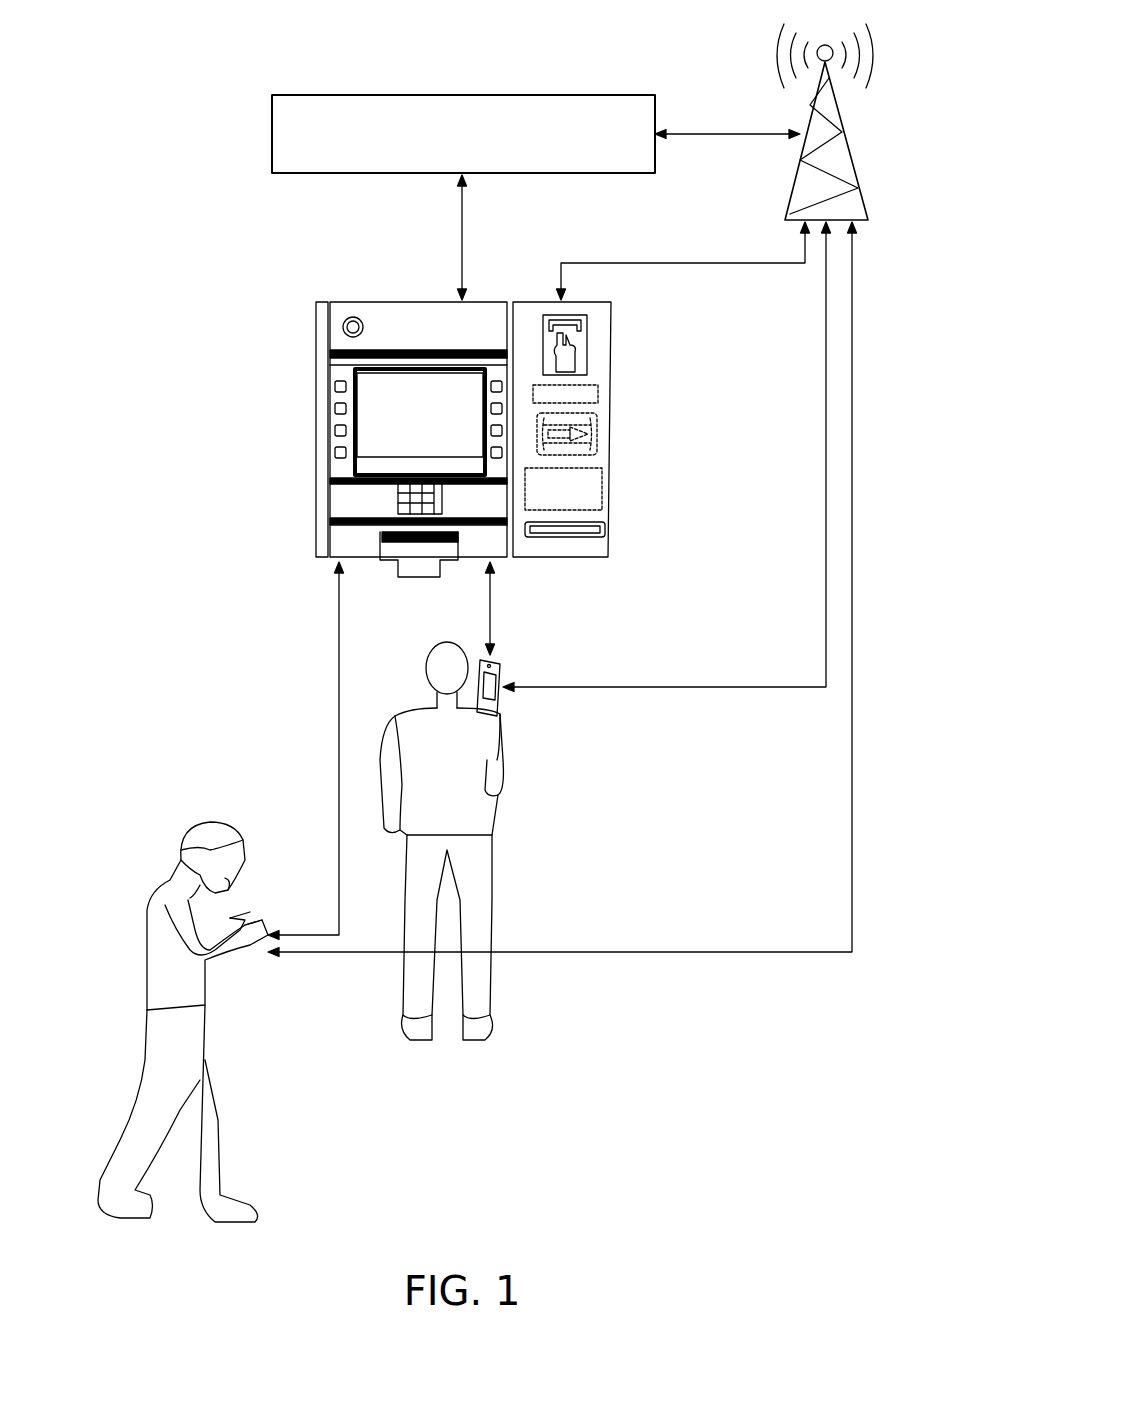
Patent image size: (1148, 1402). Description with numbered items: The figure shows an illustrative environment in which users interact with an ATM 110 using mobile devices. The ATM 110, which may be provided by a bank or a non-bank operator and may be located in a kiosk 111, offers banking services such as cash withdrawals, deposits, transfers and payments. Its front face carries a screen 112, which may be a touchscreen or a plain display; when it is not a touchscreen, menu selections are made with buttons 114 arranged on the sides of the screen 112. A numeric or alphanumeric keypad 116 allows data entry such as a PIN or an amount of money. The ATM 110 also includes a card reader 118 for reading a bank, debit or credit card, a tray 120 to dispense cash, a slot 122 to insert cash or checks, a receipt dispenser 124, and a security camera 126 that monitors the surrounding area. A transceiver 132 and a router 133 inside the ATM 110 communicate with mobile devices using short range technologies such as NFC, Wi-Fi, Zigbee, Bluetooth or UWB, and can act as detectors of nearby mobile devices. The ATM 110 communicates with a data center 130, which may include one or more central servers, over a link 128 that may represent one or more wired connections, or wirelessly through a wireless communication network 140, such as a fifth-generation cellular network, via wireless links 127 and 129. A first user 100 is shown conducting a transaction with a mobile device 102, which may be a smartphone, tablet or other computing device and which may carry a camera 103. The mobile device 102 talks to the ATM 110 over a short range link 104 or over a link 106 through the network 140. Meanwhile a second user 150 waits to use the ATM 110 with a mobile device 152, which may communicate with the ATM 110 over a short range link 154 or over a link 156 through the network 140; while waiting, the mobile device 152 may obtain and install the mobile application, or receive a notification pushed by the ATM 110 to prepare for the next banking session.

The user 100 is at (486, 850).
The mobile device 102 is at (503, 680).
The camera 103 is at (482, 662).
The link 104 is at (490, 608).
The link 106 is at (728, 687).
The ATM 110 is at (472, 413).
The kiosk 111 is at (628, 363).
The screen 112 is at (367, 420).
The buttons 114 is at (338, 386).
The keypad 116 is at (398, 497).
The card reader 118 is at (597, 432).
The tray 120 is at (382, 537).
The slot 122 is at (605, 528).
The receipt dispenser 124 is at (587, 326).
The security camera 126 is at (352, 317).
The wireless link 127 is at (608, 263).
The link 128 is at (462, 242).
The wireless link 129 is at (718, 134).
The data center 130 is at (462, 95).
The transceiver 132 is at (602, 488).
The router 133 is at (598, 393).
The wireless communication network 140 is at (850, 150).
The second user 150 is at (183, 1049).
The mobile device 152 is at (268, 925).
The link 154 is at (339, 648).
The link 156 is at (660, 952).